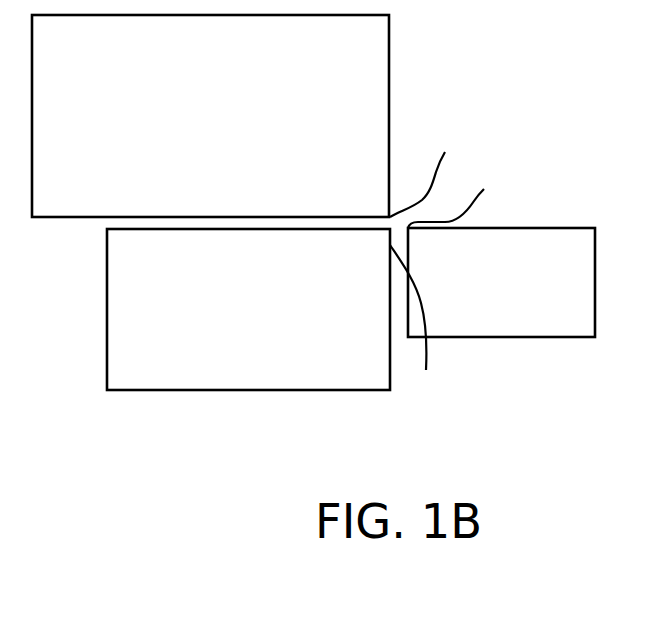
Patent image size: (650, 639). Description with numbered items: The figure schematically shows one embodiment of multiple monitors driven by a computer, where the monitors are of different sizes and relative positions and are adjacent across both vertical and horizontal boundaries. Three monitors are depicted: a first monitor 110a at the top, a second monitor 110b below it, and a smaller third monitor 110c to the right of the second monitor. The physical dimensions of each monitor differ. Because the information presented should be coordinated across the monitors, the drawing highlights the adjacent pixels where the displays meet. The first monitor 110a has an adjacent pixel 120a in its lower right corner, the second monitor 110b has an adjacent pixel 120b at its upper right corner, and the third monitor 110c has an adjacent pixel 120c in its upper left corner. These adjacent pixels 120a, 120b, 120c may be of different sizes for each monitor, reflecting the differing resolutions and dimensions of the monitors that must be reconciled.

The first monitor 110a is at (210, 116).
The second monitor 110b is at (248, 309).
The third monitor 110c is at (501, 282).
The adjacent pixel 120a is at (441, 165).
The adjacent pixel 120b is at (422, 321).
The adjacent pixel 120c is at (468, 190).